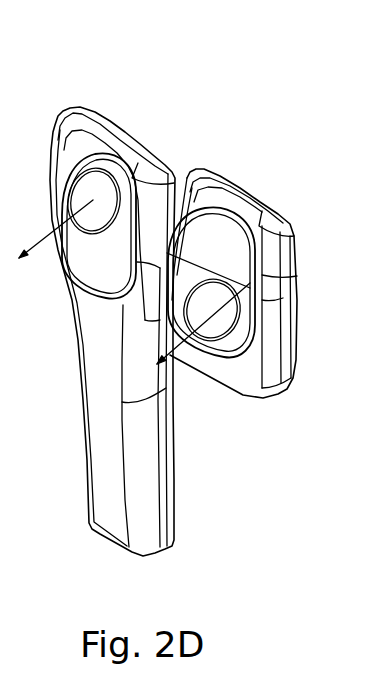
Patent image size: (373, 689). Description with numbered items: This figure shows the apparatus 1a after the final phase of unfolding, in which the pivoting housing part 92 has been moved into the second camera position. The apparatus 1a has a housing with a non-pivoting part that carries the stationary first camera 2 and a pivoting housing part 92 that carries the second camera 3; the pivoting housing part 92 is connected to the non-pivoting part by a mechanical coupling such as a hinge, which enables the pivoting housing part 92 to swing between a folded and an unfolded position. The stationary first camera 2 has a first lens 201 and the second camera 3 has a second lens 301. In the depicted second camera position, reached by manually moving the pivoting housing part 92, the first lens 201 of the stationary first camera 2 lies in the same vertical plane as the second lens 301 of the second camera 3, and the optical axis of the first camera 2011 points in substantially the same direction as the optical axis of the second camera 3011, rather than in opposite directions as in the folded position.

The apparatus 1a is at (107, 80).
The stationary first camera 2 is at (85, 238).
The first lens 201 is at (93, 202).
The optical axis of the first camera 2011 is at (21, 257).
The second camera 3 is at (242, 360).
The second lens 301 is at (222, 328).
The optical axis of the second camera 3011 is at (174, 352).
The pivoting housing part 92 is at (243, 190).